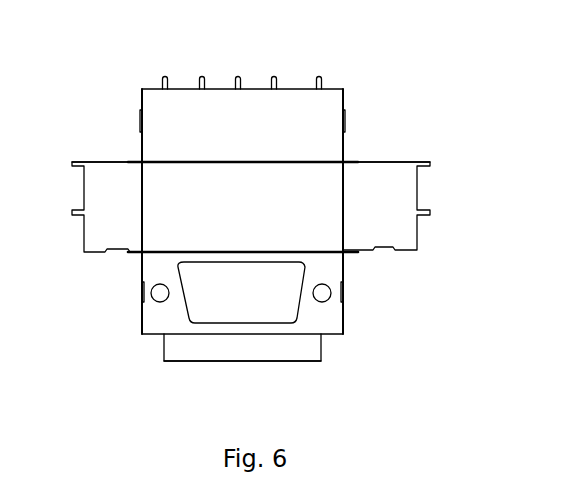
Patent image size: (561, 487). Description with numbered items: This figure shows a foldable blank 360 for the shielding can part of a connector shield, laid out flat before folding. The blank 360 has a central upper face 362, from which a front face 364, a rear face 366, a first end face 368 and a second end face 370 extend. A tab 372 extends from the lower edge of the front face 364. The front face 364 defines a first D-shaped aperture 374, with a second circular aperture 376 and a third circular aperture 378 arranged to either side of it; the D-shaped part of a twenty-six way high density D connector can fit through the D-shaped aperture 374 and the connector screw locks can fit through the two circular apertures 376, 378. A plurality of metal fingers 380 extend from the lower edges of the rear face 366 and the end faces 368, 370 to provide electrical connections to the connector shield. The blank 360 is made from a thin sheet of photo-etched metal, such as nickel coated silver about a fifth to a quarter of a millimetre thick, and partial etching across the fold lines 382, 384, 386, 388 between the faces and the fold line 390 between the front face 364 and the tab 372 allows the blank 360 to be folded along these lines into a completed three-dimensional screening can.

The foldable blank 360 is at (390, 98).
The upper face 362 is at (185, 216).
The front face 364 is at (328, 272).
The rear face 366 is at (187, 133).
The first end face 368 is at (92, 216).
The second end face 370 is at (367, 216).
The tab 372 is at (163, 347).
The first D-shaped aperture 374 is at (293, 315).
The second circular aperture 376 is at (155, 294).
The third circular aperture 378 is at (331, 293).
The metal fingers 380 is at (275, 77).
The fold line 382 is at (312, 250).
The fold line 384 is at (345, 178).
The fold line 386 is at (317, 159).
The fold line 388 is at (140, 180).
The fold line 390 is at (248, 334).